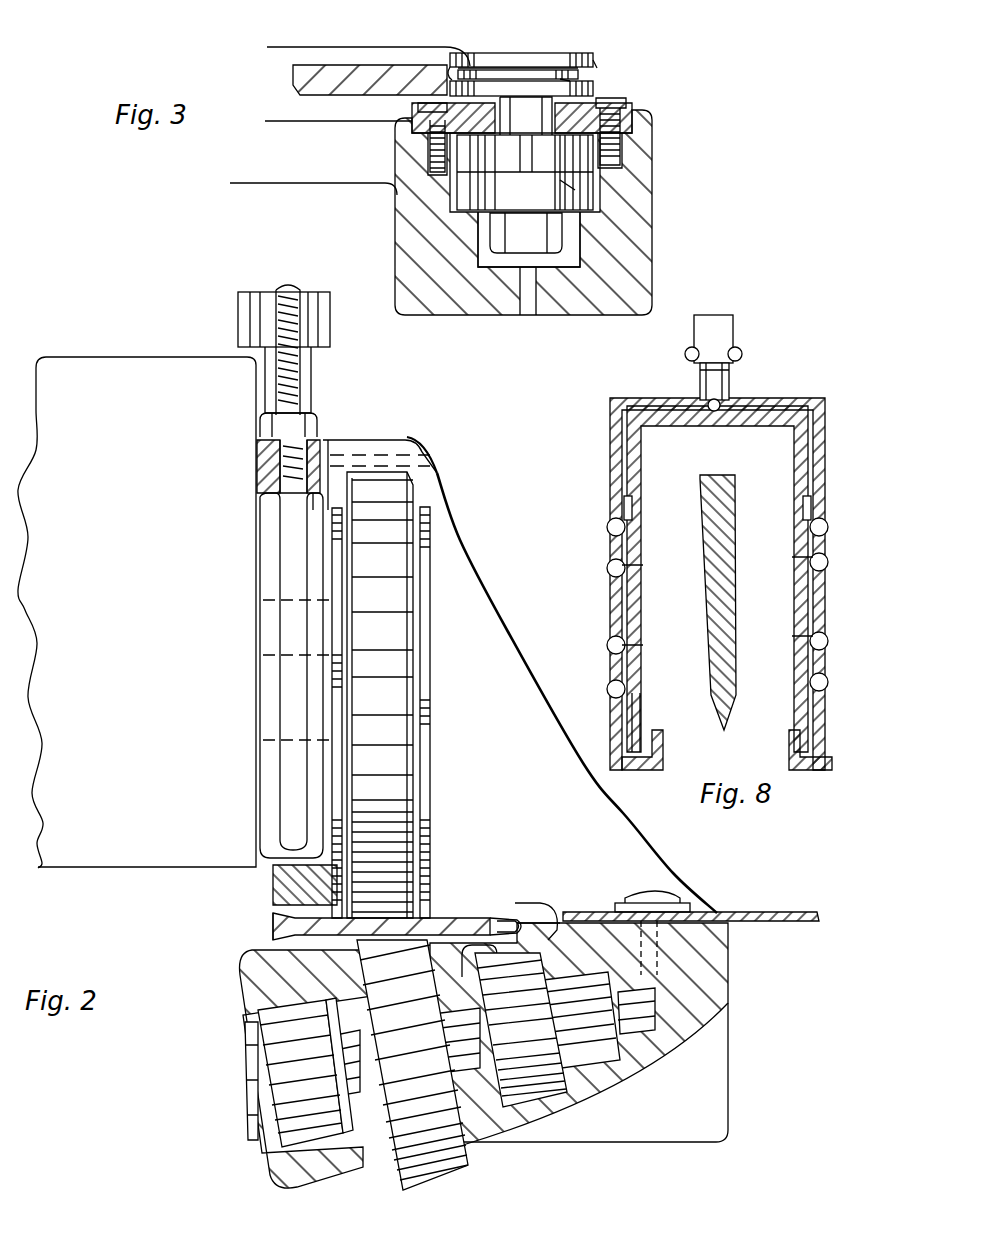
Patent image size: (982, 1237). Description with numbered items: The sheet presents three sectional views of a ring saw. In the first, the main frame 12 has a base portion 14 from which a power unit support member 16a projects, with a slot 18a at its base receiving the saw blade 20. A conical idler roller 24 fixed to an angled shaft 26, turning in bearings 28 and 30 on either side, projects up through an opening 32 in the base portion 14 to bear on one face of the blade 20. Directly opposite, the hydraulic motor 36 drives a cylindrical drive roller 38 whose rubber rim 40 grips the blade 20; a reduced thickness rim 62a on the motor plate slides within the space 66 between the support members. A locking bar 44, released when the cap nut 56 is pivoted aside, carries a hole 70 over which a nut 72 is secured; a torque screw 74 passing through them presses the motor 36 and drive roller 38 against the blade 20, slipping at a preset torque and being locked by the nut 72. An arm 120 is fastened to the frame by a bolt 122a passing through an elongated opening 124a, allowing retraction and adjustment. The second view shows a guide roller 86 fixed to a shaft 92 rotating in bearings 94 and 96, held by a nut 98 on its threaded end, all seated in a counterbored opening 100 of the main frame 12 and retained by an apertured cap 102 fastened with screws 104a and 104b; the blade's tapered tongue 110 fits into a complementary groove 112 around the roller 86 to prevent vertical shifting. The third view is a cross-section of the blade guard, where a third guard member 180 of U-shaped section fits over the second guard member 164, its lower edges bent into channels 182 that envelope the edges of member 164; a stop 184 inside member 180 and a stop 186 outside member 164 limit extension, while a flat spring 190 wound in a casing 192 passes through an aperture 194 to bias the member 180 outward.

In FIG. 3, the main frame 12 is at (655, 148).
In FIG. 2, the main frame 12 is at (733, 1063).
In FIG. 2, the base portion 14 is at (716, 952).
In FIG. 2, the power unit support member 16a is at (678, 890).
In FIG. 2, the slot 18a is at (518, 898).
In FIG. 3, the saw blade 20 is at (357, 68).
In FIG. 2, the saw blade 20 is at (293, 930).
In FIG. 8, the saw blade 20 is at (729, 661).
In FIG. 2, the idler roller 24 is at (438, 1180).
In FIG. 2, the shaft 26 is at (373, 1080).
In FIG. 2, the bearing 28 is at (288, 1120).
In FIG. 2, the bearing 30 is at (552, 1073).
In FIG. 2, the opening 32 is at (473, 965).
In FIG. 2, the hydraulic motor 36 is at (148, 852).
In FIG. 2, the drive roller 38 is at (433, 738).
In FIG. 2, the rim 40 is at (398, 640).
In FIG. 2, the locking bar 44 is at (317, 450).
In FIG. 2, the cap nut 56 is at (318, 317).
In FIG. 2, the rim 62a is at (287, 596).
In FIG. 2, the space 66 is at (313, 510).
In FIG. 2, the hole 70 is at (278, 477).
In FIG. 2, the nut 72 is at (318, 414).
In FIG. 2, the torque screw 74 is at (300, 292).
In FIG. 3, the guide roller 86 is at (508, 58).
In FIG. 3, the shaft 92 is at (550, 134).
In FIG. 3, the bearing 94 is at (470, 158).
In FIG. 3, the bearing 96 is at (573, 190).
In FIG. 3, the nut 98 is at (560, 230).
In FIG. 3, the counterbored opening 100 is at (568, 250).
In FIG. 3, the apertured cap 102 is at (593, 66).
In FIG. 3, the screw 104a is at (414, 104).
In FIG. 3, the screw 104b is at (622, 100).
In FIG. 3, the tapered tongue 110 is at (470, 53).
In FIG. 2, the tapered tongue 110 is at (508, 920).
In FIG. 3, the groove 112 is at (568, 72).
In FIG. 2, the arm 120 is at (792, 912).
In FIG. 2, the bolt 122a is at (642, 900).
In FIG. 2, the elongated opening 124a is at (610, 910).
In FIG. 8, the second guard member 164 is at (667, 423).
In FIG. 8, the third guard member 180 is at (615, 451).
In FIG. 8, the channel 182 is at (633, 736).
In FIG. 8, the stop 184 is at (629, 500).
In FIG. 8, the stop 186 is at (631, 596).
In FIG. 8, the flat spring 190 is at (735, 380).
In FIG. 8, the casing 192 is at (718, 319).
In FIG. 8, the aperture 194 is at (720, 382).